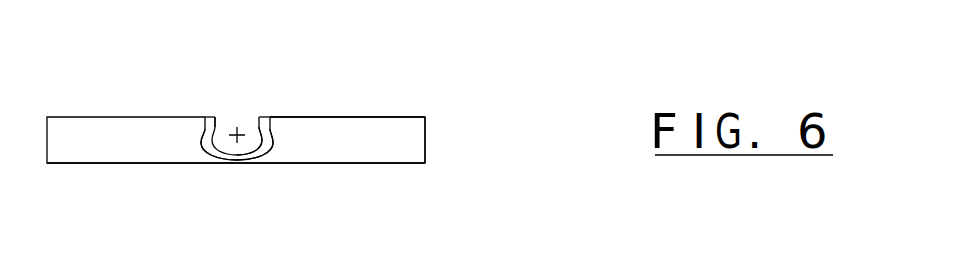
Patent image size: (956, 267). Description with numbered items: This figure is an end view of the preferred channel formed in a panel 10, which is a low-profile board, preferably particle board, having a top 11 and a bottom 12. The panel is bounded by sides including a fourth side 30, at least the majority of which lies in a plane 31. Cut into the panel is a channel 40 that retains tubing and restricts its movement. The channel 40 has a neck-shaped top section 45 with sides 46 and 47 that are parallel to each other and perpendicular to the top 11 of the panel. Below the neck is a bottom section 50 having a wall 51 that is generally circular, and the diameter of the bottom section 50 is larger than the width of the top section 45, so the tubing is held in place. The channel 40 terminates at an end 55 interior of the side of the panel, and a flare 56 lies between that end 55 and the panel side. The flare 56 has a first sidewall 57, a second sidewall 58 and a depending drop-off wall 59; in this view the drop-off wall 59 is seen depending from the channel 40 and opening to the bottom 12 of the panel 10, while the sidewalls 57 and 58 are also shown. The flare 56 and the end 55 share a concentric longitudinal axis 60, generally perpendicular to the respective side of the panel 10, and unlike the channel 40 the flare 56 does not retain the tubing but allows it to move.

The panel 10 is at (370, 117).
The top 11 is at (407, 117).
The bottom 12 is at (415, 164).
The fourth side 30 is at (415, 137).
The plane 31 is at (410, 157).
The channel 40 is at (268, 117).
The top section 45 is at (219, 116).
The side 46 is at (216, 131).
The side 47 is at (257, 118).
The bottom section 50 is at (221, 162).
The wall 51 is at (251, 146).
The end 55 is at (214, 143).
The flare 56 is at (260, 155).
The first sidewall 57 is at (217, 159).
The second sidewall 58 is at (259, 144).
The depending drop-off wall 59 is at (245, 157).
The longitudinal axis 60 is at (238, 135).